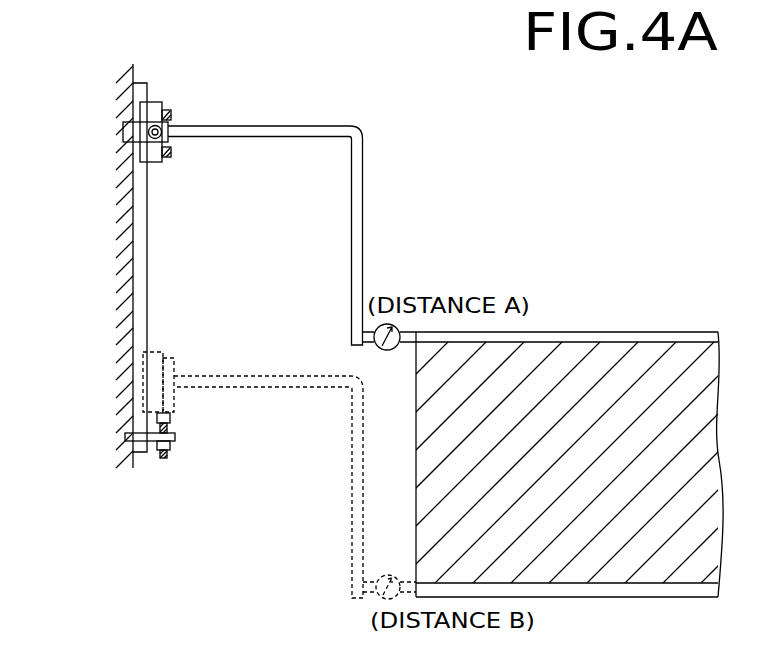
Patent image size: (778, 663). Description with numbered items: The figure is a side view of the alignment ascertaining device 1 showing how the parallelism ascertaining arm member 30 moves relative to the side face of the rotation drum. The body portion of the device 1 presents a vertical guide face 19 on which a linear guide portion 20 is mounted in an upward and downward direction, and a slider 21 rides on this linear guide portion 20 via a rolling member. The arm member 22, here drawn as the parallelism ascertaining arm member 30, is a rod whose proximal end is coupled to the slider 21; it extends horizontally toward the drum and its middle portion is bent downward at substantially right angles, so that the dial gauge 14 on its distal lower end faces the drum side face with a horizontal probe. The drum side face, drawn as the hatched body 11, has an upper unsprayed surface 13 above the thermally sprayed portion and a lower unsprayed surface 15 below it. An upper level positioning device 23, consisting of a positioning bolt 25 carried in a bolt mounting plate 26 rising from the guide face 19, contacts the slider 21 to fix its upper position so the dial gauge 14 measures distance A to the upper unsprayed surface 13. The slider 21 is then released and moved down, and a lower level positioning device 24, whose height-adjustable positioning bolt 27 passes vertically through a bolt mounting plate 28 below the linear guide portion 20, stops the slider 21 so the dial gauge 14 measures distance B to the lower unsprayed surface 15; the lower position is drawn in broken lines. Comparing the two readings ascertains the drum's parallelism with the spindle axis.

The alignment ascertaining device 1 is at (372, 98).
The workpiece 11 is at (389, 331).
The upper unsprayed surface 13 is at (665, 336).
The dial gauge 14 is at (388, 351).
The lower unsprayed surface 15 is at (622, 590).
The guide face 19 is at (134, 216).
The linear guide portion 20 is at (147, 270).
The slider 21 is at (157, 102).
The arm member 22 is at (363, 187).
The upper level positioning device 23 is at (109, 75).
The lower level positioning device 24 is at (202, 431).
The positioning bolt 25 is at (148, 124).
The bolt mounting plate 26 is at (123, 128).
The positioning bolt 27 is at (172, 418).
The bolt mounting plate 28 is at (176, 437).
The parallelism ascertaining arm member 30 is at (323, 235).